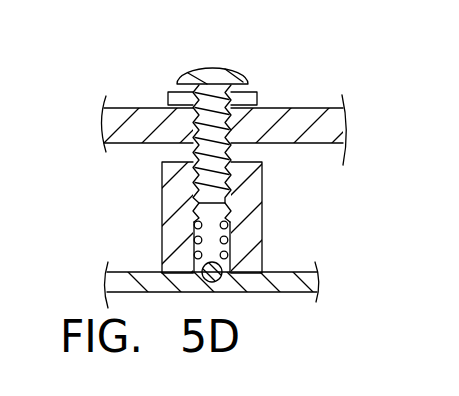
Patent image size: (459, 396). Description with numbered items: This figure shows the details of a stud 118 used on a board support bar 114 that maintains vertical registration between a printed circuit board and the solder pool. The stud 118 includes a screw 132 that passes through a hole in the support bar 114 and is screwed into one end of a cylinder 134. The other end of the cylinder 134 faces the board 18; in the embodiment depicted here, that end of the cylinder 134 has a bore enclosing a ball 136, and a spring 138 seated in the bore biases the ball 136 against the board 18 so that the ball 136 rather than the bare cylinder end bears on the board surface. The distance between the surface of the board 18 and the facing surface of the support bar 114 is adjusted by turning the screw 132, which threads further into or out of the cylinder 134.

The support bar 114 is at (293, 125).
The board 18 is at (292, 281).
The stud 118 is at (144, 185).
The screw 132 is at (233, 145).
The cylinder 134 is at (247, 191).
The spring 138 is at (218, 228).
The ball 136 is at (222, 281).